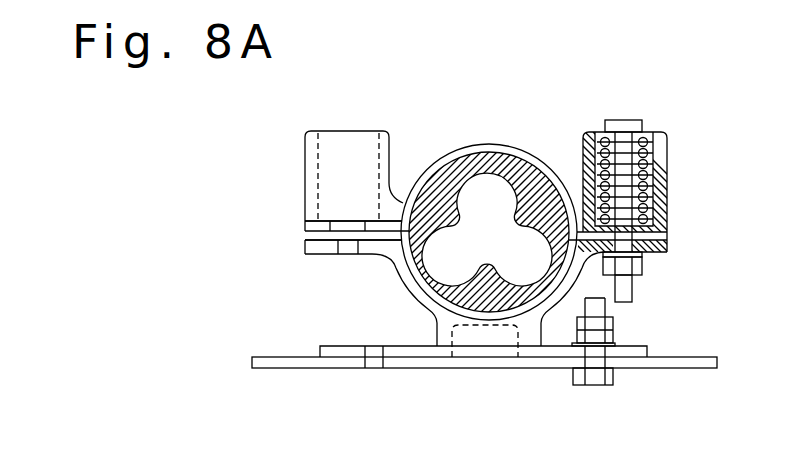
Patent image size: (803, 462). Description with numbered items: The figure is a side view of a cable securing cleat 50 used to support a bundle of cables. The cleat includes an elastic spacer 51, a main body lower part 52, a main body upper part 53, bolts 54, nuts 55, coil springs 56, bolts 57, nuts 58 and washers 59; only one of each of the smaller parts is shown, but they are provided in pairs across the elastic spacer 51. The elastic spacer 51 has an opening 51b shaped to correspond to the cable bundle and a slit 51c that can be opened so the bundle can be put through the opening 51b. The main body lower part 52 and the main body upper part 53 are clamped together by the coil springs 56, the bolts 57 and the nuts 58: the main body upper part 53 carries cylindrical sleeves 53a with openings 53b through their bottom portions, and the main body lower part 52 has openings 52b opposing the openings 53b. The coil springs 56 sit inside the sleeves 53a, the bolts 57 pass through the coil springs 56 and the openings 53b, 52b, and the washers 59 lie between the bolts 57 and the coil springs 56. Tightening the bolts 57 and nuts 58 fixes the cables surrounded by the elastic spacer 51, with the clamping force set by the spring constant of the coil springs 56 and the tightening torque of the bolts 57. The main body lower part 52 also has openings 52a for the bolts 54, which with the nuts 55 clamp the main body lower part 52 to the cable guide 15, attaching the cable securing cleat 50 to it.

The cable guide 15 is at (675, 365).
The cable securing cleat 50 is at (193, 187).
The elastic spacer 51 is at (440, 178).
The opening 51b is at (491, 168).
The slit 51c is at (415, 288).
The main body lower part 52 is at (398, 278).
The openings 52a is at (375, 348).
The openings 52b is at (350, 255).
The main body upper part 53 is at (517, 155).
The cylindrical sleeves 53a is at (306, 178).
The openings 53b is at (350, 226).
The bolts 54 is at (605, 388).
The nuts 55 is at (618, 335).
The coil springs 56 is at (643, 160).
The bolts 57 is at (620, 122).
The nuts 58 is at (642, 265).
The washers 59 is at (645, 132).